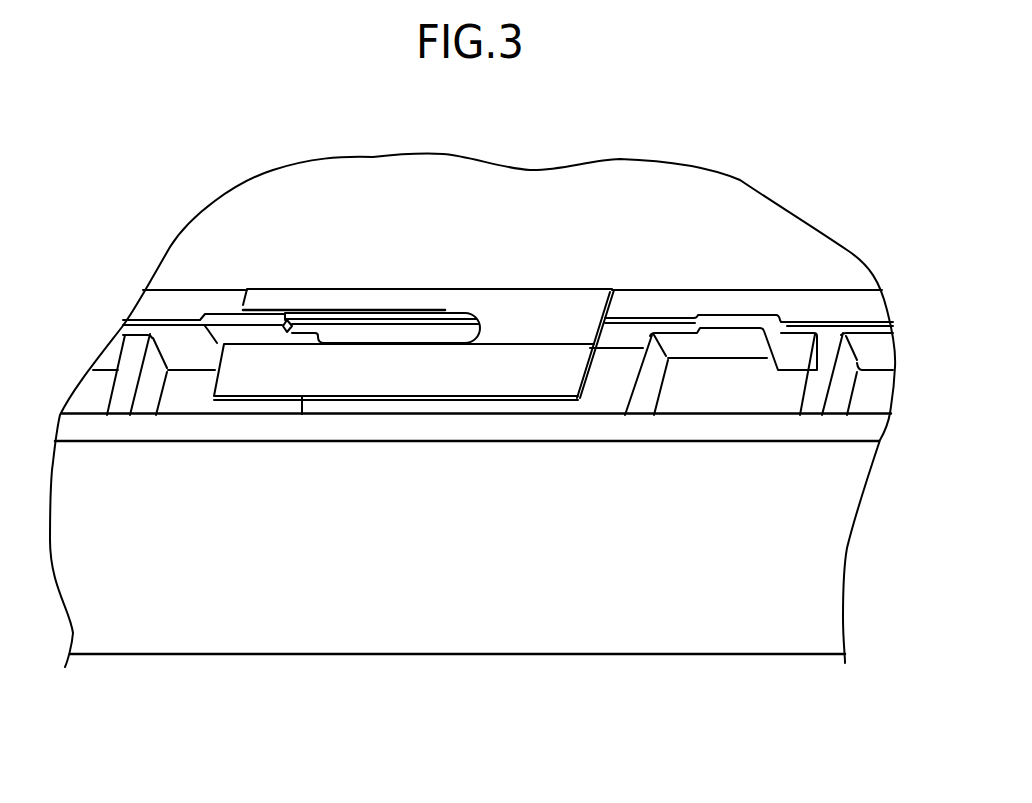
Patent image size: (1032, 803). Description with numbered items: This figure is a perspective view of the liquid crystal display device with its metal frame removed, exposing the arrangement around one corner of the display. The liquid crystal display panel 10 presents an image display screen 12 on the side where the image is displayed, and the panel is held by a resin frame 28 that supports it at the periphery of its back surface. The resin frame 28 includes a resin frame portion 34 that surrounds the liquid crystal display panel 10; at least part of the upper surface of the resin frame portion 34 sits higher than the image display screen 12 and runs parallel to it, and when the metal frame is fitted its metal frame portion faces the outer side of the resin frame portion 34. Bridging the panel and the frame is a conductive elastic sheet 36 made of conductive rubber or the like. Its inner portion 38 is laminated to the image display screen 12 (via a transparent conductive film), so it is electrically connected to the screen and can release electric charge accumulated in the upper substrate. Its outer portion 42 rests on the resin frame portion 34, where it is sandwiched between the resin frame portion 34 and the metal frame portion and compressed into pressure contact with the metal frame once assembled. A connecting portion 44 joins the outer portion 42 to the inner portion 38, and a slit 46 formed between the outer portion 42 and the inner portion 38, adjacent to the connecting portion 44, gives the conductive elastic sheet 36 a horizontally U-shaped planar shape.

The liquid crystal display panel 10 is at (708, 203).
The image display screen 12 is at (325, 236).
The resin frame 28 is at (346, 622).
The resin frame portion 34 is at (250, 431).
The conductive elastic sheet 36 is at (444, 401).
The inner portion 38 is at (512, 303).
The outer portion 42 is at (521, 373).
The connecting portion 44 is at (558, 328).
The slit 46 is at (447, 323).